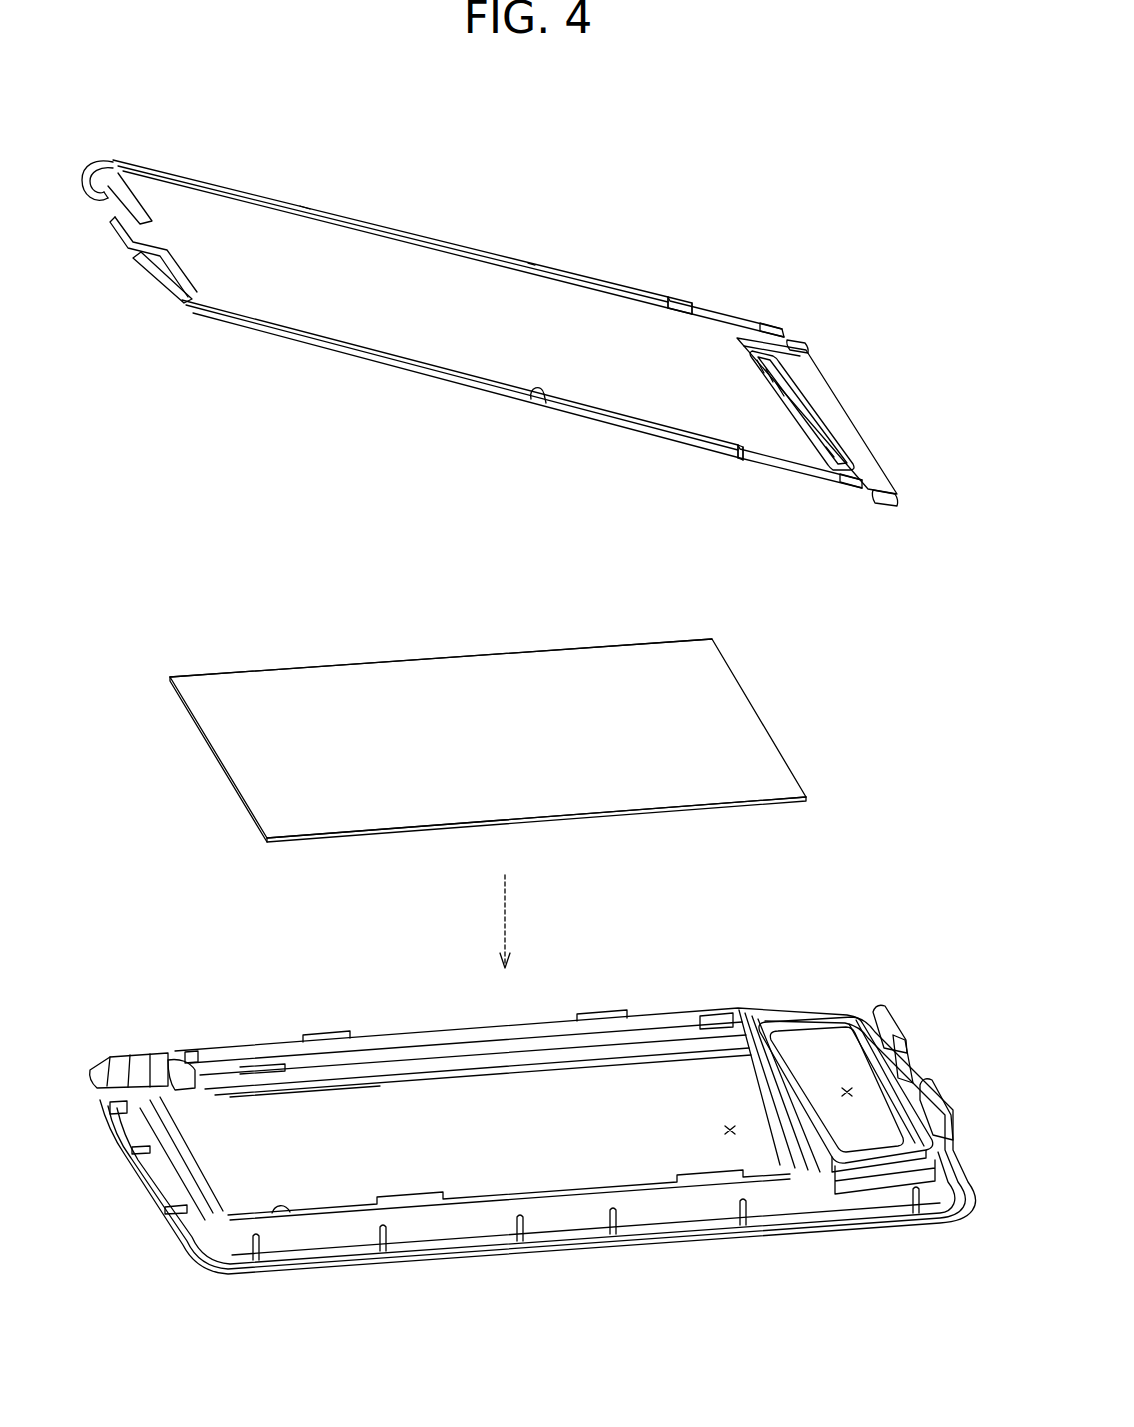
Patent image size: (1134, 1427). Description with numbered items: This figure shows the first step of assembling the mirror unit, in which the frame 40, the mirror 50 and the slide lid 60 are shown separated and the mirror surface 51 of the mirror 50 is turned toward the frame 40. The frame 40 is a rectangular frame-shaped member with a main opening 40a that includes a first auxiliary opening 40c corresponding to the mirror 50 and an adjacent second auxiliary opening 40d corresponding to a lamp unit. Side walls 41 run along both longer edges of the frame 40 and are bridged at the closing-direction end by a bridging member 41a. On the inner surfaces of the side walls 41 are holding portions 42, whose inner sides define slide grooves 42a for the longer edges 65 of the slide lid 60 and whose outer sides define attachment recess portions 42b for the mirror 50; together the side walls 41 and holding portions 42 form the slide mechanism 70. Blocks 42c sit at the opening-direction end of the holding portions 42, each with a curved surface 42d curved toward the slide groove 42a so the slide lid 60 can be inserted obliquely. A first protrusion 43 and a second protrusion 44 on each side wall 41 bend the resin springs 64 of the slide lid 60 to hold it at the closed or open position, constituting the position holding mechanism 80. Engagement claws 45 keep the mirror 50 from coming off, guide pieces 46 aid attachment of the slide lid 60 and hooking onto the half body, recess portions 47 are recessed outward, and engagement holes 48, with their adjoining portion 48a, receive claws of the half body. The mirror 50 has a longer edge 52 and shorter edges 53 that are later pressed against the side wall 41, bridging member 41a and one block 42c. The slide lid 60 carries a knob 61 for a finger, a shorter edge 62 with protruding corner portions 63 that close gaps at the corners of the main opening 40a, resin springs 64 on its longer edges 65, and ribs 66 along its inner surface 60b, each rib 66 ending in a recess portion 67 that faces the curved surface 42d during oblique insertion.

The frame 40 is at (536, 995).
The main opening 40a is at (820, 1290).
The first auxiliary opening 40c is at (730, 1130).
The second auxiliary opening 40d is at (848, 1095).
The side wall 41 is at (405, 1040).
The bridging member 41a is at (786, 1085).
The holding portion 42 is at (485, 1055).
The slide groove 42a is at (386, 1076).
The attachment recess portion 42b is at (268, 1048).
The block 42c is at (190, 1050).
The curved surface 42d is at (200, 1090).
The first protrusion 43 is at (707, 1027).
The second protrusion 44 is at (140, 1065).
The engagement claw 45 is at (325, 1032).
The guide piece 46 is at (100, 1070).
The recess portion 47 is at (157, 1068).
The engagement hole 48 is at (880, 1010).
The hook base 48a is at (905, 1070).
The mirror 50 is at (754, 656).
The mirror surface 51 is at (298, 706).
The longer edge 52 is at (228, 672).
The shorter edge 53 is at (766, 723).
The slide lid 60 is at (607, 251).
The inner surface 60b is at (413, 264).
The knob 61 is at (815, 431).
The shorter edge 62 is at (110, 205).
The corner portion 63 is at (812, 349).
The resin spring 64 is at (683, 306).
The longer edge 65 is at (276, 192).
The rib 66 is at (530, 272).
The recess portion 67 is at (780, 328).
The slide mechanism 70 is at (487, 324).
The position holding mechanism 80 is at (705, 378).